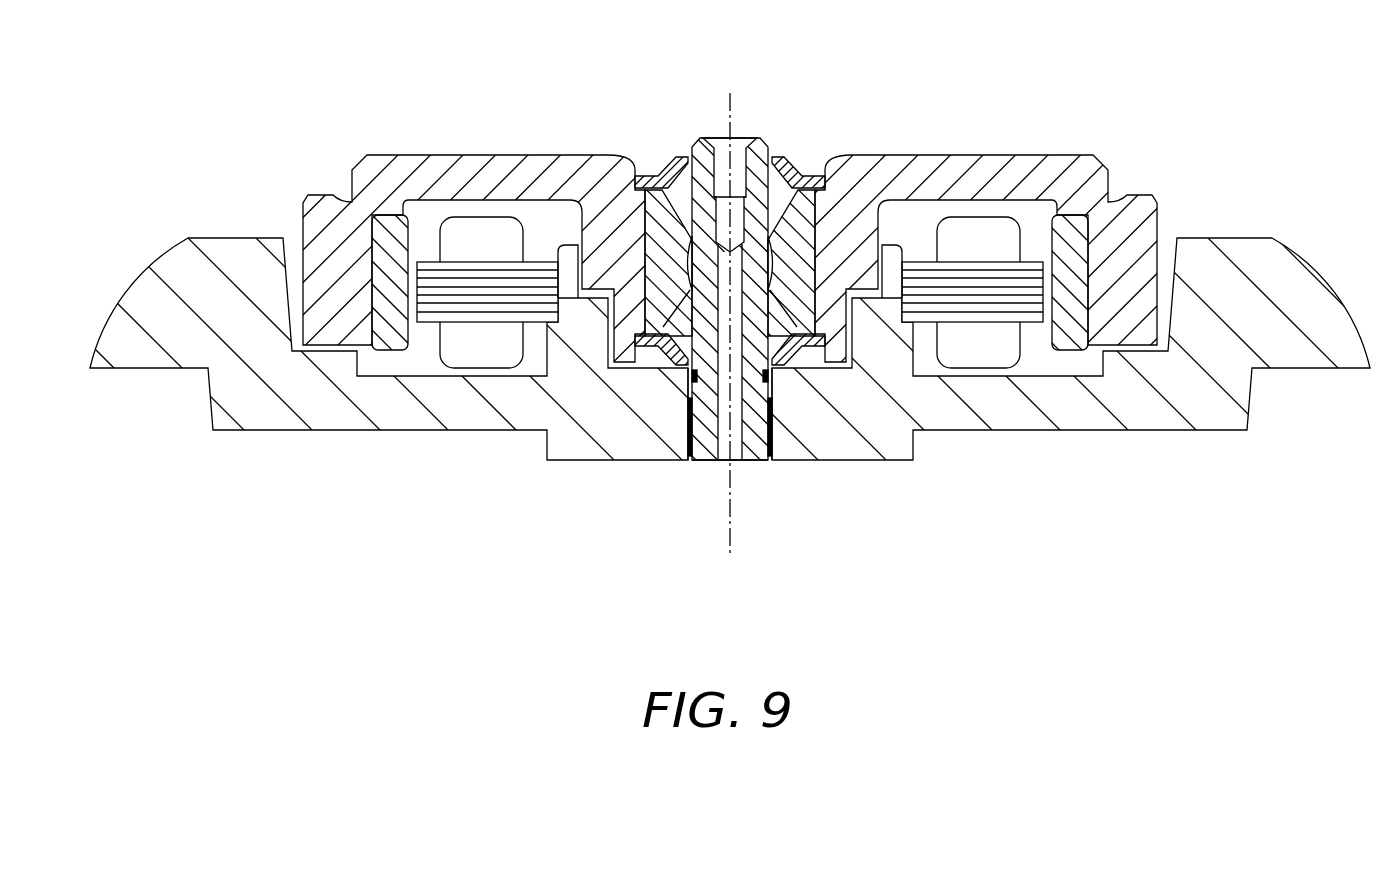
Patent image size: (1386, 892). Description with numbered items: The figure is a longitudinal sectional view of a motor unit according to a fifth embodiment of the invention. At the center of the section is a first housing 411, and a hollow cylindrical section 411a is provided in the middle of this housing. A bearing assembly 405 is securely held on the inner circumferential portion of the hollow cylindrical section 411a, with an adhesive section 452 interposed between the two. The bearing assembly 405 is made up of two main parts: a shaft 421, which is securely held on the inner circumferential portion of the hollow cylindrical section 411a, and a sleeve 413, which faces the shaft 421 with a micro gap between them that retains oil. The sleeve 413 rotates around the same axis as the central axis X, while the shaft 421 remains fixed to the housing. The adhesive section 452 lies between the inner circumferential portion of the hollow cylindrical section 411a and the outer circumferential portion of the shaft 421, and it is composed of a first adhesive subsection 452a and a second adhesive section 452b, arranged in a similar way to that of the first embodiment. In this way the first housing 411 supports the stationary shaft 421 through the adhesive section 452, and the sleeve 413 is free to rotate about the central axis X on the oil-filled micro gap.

The central axis X is at (730, 125).
The shaft 421 is at (760, 137).
The first adhesive subsection 452a is at (690, 382).
The second adhesive section 452b is at (687, 429).
The adhesive section 452 is at (612, 488).
The bearing assembly 405 is at (777, 476).
The hollow cylindrical section 411a is at (822, 430).
The sleeve 413 is at (792, 277).
The first housing 411 is at (1065, 400).